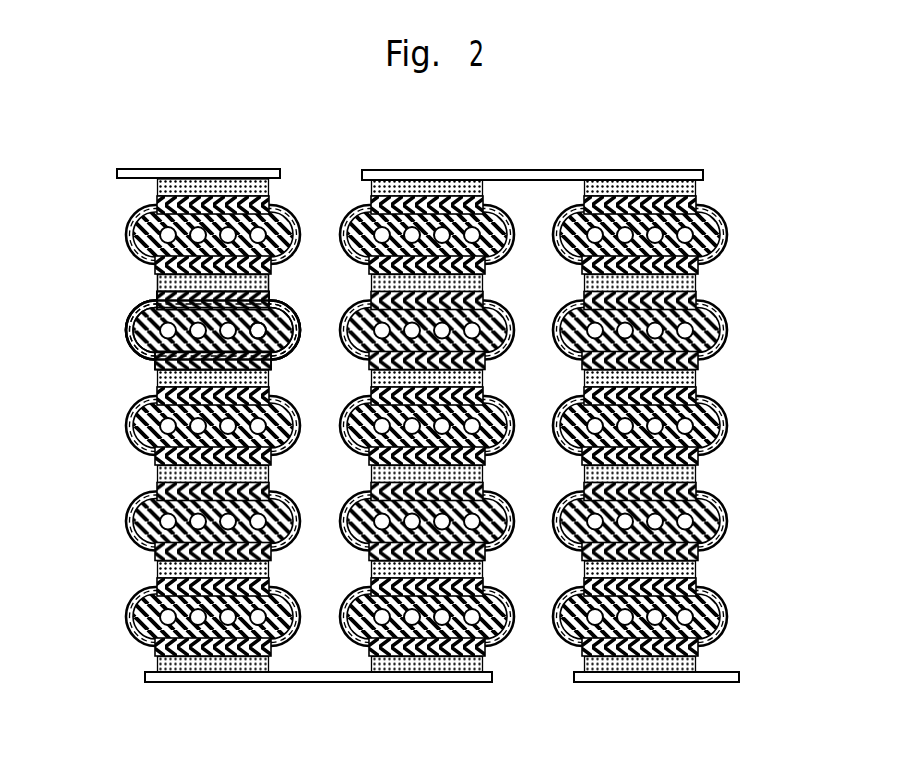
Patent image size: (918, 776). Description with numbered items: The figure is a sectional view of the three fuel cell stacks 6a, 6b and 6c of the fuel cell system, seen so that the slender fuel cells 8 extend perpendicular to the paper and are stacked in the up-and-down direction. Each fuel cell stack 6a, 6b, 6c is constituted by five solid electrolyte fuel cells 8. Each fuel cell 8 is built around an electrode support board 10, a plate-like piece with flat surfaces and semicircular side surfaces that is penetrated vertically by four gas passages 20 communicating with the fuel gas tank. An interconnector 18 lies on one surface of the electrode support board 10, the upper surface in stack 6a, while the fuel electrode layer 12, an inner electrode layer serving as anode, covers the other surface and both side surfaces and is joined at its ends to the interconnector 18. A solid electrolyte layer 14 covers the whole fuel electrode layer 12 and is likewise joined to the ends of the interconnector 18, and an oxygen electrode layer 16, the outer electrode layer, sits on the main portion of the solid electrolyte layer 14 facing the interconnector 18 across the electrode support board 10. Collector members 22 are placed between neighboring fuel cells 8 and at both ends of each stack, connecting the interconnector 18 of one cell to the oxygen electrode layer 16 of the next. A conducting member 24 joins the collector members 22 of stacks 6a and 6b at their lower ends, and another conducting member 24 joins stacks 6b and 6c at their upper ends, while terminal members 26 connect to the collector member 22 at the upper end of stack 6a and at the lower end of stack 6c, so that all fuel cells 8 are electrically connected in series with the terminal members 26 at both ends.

The fuel cell stack 6a is at (93, 448).
The fuel cell stack 6b is at (518, 647).
The fuel cell stack 6c is at (755, 268).
The fuel cell 8 is at (127, 318).
The electrode support board 10 is at (133, 342).
The fuel electrode layer 12 is at (147, 358).
The solid electrolyte layer 14 is at (133, 352).
The oxygen electrode layer 16 is at (277, 365).
The interconnector 18 is at (267, 293).
The gas passage 20 is at (264, 330).
The collector member 22 is at (157, 278).
The conducting member 24 is at (497, 169).
The terminal member 26 is at (155, 168).